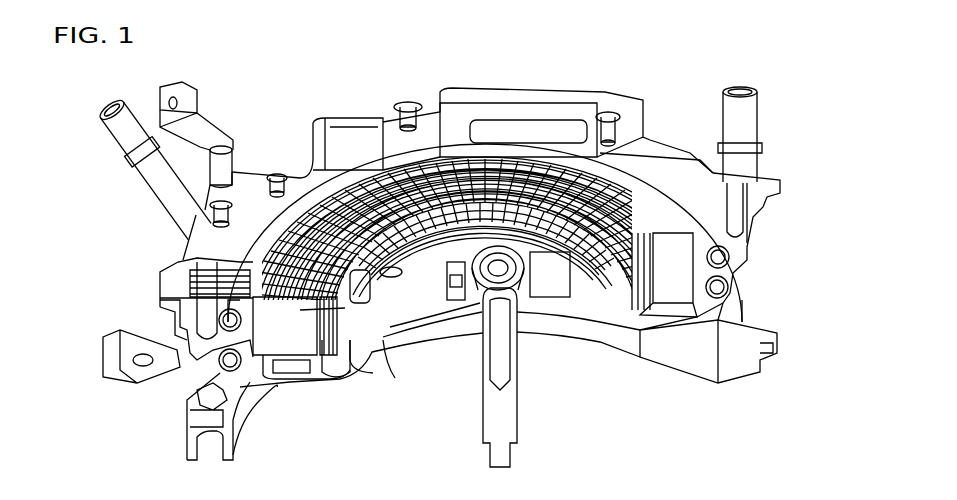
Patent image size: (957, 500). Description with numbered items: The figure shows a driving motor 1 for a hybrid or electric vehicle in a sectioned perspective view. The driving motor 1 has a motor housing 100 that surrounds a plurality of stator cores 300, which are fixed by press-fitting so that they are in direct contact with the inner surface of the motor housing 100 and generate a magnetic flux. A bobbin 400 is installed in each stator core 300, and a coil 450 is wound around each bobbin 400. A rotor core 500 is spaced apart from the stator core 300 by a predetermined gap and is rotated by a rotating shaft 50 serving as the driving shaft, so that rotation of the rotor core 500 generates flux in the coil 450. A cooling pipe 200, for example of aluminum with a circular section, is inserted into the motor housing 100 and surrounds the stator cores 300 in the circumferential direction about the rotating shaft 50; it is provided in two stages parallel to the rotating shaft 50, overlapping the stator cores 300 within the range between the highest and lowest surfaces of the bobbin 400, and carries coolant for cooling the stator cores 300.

The driving motor 1 is at (843, 172).
The rotating shaft 50 is at (522, 413).
The motor housing 100 is at (743, 258).
The cooling pipe 200 is at (730, 282).
The stator core 300 is at (273, 336).
The bobbin 400 is at (307, 380).
The coil 450 is at (283, 380).
The rotor core 500 is at (350, 378).